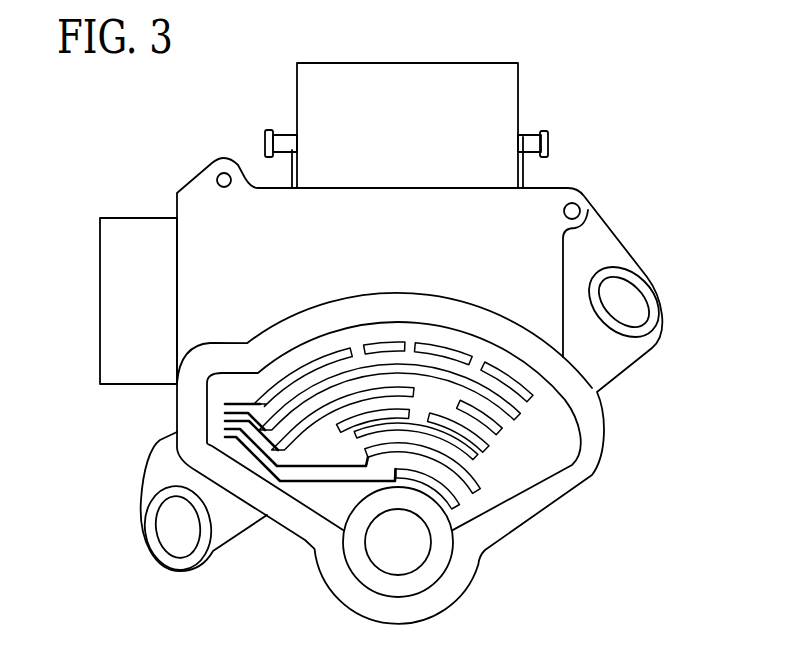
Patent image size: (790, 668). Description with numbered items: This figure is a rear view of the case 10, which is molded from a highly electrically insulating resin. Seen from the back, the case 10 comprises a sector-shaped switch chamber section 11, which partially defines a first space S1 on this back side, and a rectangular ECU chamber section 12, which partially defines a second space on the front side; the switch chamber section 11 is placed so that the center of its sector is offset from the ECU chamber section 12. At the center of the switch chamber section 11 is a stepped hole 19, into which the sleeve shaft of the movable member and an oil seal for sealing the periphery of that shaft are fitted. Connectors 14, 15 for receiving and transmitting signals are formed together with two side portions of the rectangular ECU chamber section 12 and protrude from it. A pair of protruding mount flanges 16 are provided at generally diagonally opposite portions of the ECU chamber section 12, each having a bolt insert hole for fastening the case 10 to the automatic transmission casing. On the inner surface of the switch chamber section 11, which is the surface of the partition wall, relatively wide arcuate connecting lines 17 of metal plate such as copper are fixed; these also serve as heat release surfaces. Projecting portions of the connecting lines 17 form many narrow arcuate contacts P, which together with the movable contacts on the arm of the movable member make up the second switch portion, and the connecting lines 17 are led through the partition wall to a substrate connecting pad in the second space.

The case 10 is at (631, 225).
The switch chamber section 11 is at (553, 498).
The ECU chamber section 12 is at (546, 200).
The connector 14 is at (505, 92).
The connector 15 is at (118, 288).
The mount flange 16 is at (635, 268).
The connecting line 17 is at (348, 343).
The stepped hole 19 is at (408, 556).
The arcuate contact P is at (458, 350).
The first space S1 is at (560, 420).